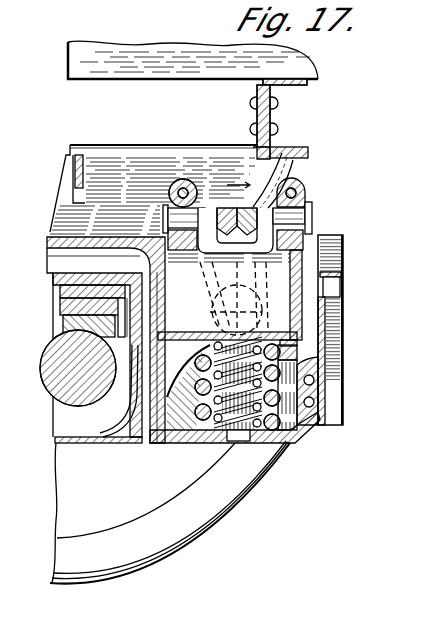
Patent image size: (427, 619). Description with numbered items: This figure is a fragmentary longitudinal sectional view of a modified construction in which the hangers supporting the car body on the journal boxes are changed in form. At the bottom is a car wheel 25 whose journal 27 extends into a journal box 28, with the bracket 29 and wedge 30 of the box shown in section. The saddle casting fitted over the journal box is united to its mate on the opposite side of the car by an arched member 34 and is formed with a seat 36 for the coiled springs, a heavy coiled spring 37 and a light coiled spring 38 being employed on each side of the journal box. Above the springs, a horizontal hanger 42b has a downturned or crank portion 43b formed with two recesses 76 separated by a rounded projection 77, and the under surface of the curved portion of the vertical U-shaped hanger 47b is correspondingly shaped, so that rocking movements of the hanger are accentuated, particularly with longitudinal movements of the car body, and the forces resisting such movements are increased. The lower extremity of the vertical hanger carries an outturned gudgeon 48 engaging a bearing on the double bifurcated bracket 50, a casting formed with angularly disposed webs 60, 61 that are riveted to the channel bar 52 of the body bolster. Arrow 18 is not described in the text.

The double bifurcated bracket 50 is at (162, 151).
The angularly disposed web 61 is at (257, 146).
The channel bar 52 is at (293, 86).
The angularly disposed web 60 is at (308, 156).
The vertical U-shaped hanger 47b is at (170, 198).
The direction of movement 18 is at (226, 182).
The rounded projection 77 is at (271, 180).
The horizontal hanger 42b is at (306, 195).
The downturned or crank portion 43b is at (313, 220).
The recess 76 is at (258, 237).
The arched member 34 is at (342, 272).
The wedge 30 is at (60, 302).
The bracket 29 is at (60, 325).
The journal 27 is at (48, 358).
The outturned gudgeon 48 is at (225, 312).
The journal box 28 is at (56, 439).
The car wheel 25 is at (70, 488).
The seat 36 is at (167, 445).
The heavy coiled spring 37 is at (203, 430).
The light coiled spring 38 is at (255, 443).